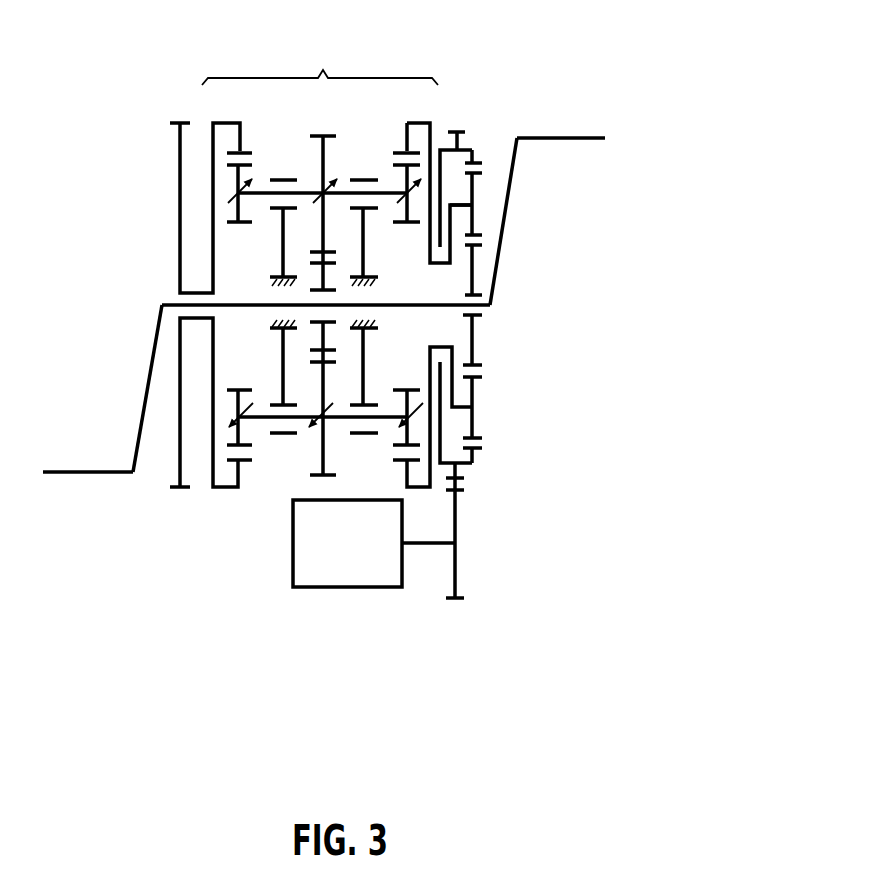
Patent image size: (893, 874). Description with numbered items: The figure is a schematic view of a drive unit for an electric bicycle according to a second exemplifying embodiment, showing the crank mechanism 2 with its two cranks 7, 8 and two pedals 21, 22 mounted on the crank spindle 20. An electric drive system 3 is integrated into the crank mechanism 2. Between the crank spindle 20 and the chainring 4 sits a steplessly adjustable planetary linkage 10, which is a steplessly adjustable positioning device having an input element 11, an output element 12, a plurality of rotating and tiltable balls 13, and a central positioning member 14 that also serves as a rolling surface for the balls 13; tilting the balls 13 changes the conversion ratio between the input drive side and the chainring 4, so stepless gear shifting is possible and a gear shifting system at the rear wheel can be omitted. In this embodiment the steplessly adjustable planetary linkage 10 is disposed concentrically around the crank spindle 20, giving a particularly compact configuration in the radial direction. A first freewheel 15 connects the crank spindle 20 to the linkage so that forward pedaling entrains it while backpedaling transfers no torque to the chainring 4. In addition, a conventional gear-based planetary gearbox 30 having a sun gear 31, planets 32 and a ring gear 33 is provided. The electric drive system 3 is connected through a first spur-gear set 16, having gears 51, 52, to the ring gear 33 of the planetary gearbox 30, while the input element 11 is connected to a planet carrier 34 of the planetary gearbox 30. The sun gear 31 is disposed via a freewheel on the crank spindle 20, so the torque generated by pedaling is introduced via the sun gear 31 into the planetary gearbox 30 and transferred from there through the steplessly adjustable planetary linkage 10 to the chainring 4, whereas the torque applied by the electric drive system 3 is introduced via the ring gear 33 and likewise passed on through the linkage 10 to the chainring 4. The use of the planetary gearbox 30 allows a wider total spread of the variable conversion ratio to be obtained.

The crank mechanism 2 is at (519, 273).
The electric drive system 3 is at (345, 572).
The chainring 4 is at (178, 162).
The crank 7 is at (503, 233).
The crank 8 is at (148, 383).
The steplessly adjustable planetary linkage 10 is at (320, 62).
The input element 11 is at (407, 138).
The output element 12 is at (240, 138).
The balls 13 is at (306, 188).
The central positioning member 14 is at (320, 335).
The first freewheel 15 is at (483, 310).
The first spur-gear set 16 is at (477, 484).
The crank spindle 20 is at (248, 304).
The pedal 21 is at (567, 137).
The pedal 22 is at (82, 475).
The planetary gearbox 30 is at (488, 151).
The sun gear 31 is at (473, 333).
The planets 32 is at (473, 390).
The ring gear 33 is at (473, 455).
The planet carrier 34 is at (457, 203).
The gear 51 is at (458, 577).
The gear 52 is at (457, 472).